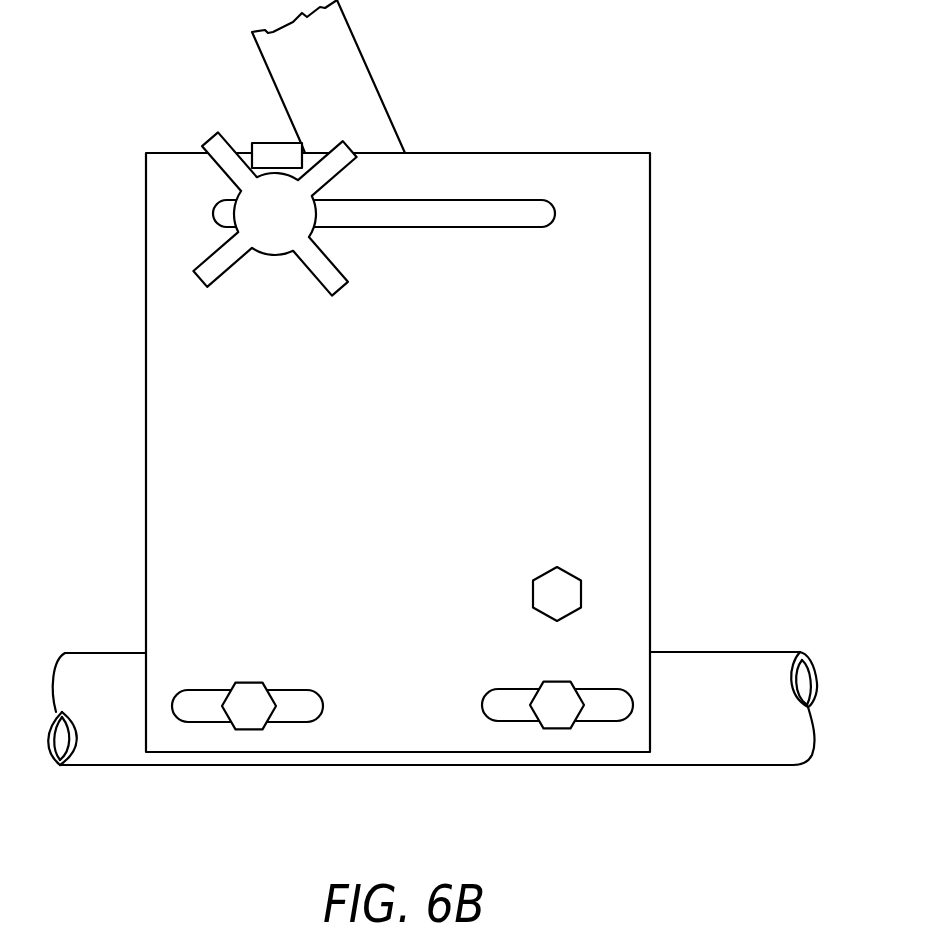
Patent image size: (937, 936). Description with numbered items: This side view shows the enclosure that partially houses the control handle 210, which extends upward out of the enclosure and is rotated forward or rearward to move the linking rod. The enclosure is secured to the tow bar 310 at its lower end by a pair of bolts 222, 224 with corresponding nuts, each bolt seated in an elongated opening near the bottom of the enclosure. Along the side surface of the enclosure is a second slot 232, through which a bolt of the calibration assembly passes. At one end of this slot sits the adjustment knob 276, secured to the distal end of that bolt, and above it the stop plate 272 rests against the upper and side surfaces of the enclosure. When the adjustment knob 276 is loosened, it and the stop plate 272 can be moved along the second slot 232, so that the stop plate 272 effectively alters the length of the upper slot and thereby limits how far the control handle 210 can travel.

The control handle 210 is at (358, 42).
The stop plate 272 is at (270, 143).
The second slot 232 is at (502, 203).
The adjustment knob 276 is at (193, 275).
The tow bar 310 is at (122, 745).
The bolt 222 is at (250, 720).
The bolt 224 is at (560, 713).